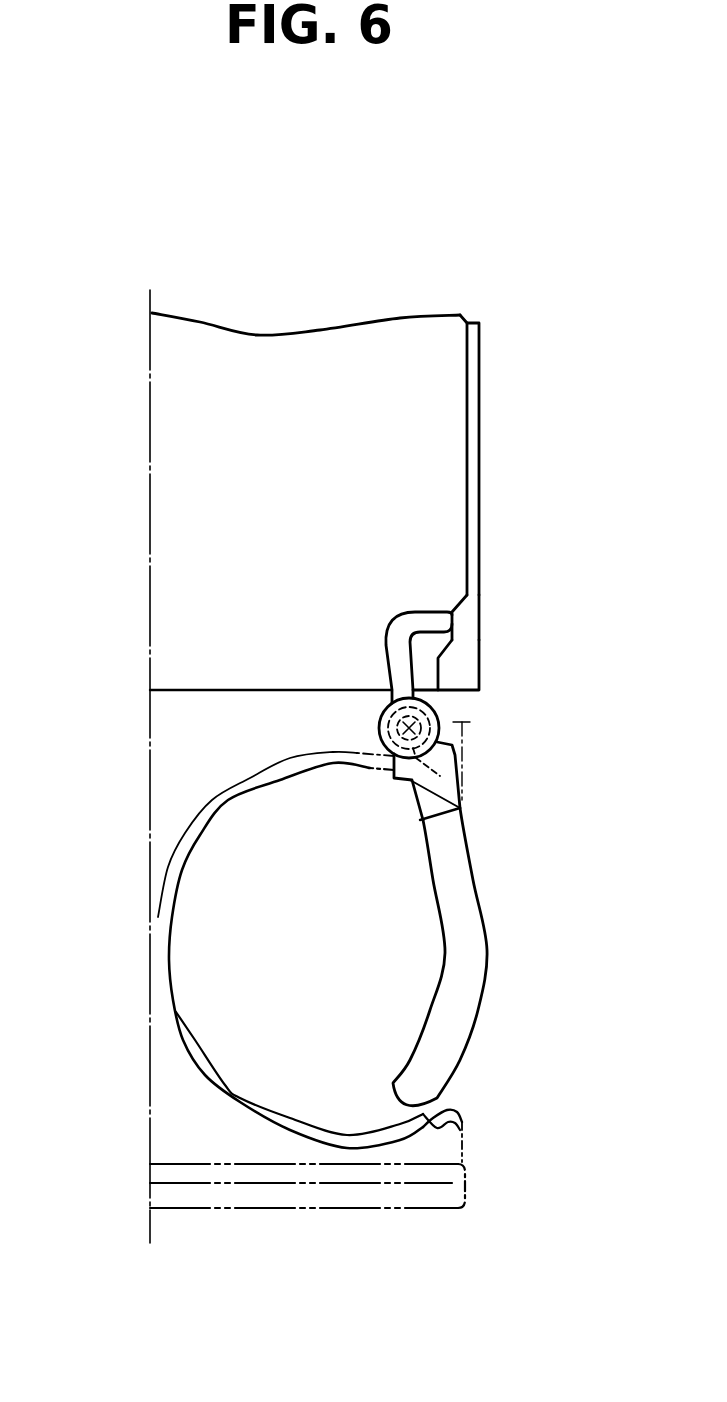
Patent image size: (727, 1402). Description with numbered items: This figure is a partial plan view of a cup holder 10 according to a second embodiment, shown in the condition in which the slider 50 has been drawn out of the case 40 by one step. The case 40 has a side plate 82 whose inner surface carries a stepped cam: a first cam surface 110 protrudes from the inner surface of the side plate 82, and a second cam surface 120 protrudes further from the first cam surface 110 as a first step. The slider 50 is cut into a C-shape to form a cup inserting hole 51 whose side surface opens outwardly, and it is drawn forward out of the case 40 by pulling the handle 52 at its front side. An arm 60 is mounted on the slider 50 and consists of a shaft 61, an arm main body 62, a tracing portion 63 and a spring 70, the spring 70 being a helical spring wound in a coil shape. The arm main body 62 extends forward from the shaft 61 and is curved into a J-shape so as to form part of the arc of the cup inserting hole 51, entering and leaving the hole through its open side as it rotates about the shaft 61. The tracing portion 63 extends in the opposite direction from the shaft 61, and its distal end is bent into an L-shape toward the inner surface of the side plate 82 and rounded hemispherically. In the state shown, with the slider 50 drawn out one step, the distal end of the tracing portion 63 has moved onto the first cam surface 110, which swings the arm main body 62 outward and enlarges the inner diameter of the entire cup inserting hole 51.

The cup holder 10 is at (173, 222).
The case 40 is at (192, 413).
The side plate 82 is at (478, 410).
The first cam surface 110 is at (472, 622).
The second cam surface 120 is at (477, 668).
The tracing portion 63 is at (410, 622).
The spring 70 is at (375, 714).
The shaft 61 is at (470, 758).
The arm main body 62 is at (470, 977).
The arm 60 is at (517, 890).
The cup inserting hole 51 is at (210, 870).
The slider 50 is at (187, 1095).
The handle 52 is at (305, 1197).